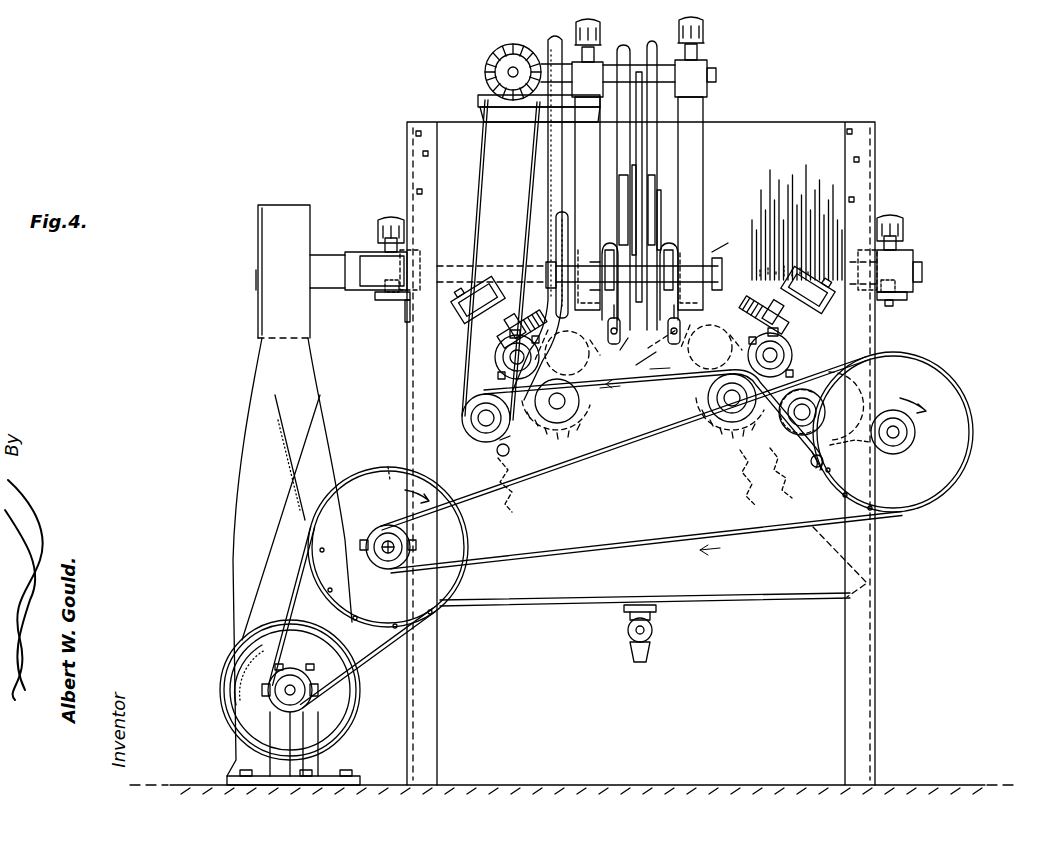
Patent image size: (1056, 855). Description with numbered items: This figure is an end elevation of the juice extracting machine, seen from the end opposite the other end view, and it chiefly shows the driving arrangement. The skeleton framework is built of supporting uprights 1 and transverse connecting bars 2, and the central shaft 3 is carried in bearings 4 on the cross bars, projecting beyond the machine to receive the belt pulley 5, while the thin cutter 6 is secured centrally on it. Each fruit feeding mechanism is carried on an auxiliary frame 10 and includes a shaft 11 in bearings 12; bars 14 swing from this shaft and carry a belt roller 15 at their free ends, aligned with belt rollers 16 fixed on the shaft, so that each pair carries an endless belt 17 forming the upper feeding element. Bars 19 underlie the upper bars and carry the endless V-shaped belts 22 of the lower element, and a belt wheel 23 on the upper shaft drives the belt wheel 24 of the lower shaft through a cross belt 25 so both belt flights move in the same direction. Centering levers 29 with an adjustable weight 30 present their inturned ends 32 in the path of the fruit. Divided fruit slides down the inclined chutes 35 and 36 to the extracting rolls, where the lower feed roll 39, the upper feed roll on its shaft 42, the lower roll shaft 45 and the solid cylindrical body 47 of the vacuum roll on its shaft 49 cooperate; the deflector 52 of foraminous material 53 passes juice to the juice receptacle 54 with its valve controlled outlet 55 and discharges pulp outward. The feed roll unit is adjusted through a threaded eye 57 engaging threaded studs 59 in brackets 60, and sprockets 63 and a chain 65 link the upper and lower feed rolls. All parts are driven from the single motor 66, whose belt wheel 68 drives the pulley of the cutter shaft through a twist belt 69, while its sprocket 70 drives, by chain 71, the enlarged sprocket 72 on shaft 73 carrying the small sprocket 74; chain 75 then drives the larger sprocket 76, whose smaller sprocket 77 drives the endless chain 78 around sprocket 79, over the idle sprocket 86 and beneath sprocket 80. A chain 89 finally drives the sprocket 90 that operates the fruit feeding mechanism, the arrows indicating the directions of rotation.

The supporting uprights 1 is at (407, 358).
The transverse connecting bars 2 is at (383, 300).
The shaft 3 is at (922, 272).
The bearings 4 is at (370, 256).
The belt pulley 5 is at (258, 222).
The cutter 6 is at (649, 355).
The auxiliary frames 10 is at (703, 118).
The shaft 11 is at (640, 72).
The bearings 12 is at (716, 72).
The bars 14 is at (632, 176).
The belt roller 15 is at (662, 196).
The belt rollers 16 is at (657, 52).
The endless belt 17 is at (620, 160).
The bars 19 is at (690, 316).
The endless V-shaped belts 22 is at (668, 330).
The belt wheel 23 is at (551, 40).
The belt wheel 24 is at (556, 252).
The cross belt 25 is at (556, 140).
The levers 29 is at (694, 266).
The adjustable weight 30 is at (682, 333).
The inturned ends 32 is at (672, 245).
The inclined chute 35 is at (575, 352).
The inclined chute 36 is at (701, 347).
The lower feed roll 39 is at (506, 456).
The shaft 42 is at (495, 360).
The shaft 45 is at (827, 392).
The solid cylindrical body 47 is at (578, 424).
The shaft 49 is at (580, 402).
The deflector 52 is at (666, 584).
The foraminous material 53 is at (645, 482).
The juice receptacle 54 is at (586, 604).
The valve controlled outlet 55 is at (652, 630).
The threaded eye 57 is at (520, 330).
The threaded studs 59 is at (510, 324).
The brackets 60 is at (470, 312).
The sprockets 63 is at (508, 330).
The chain 65 is at (498, 376).
The motor 66 is at (226, 706).
The belt wheel 68 is at (342, 720).
The twist belt 69 is at (304, 372).
The sprocket 70 is at (298, 676).
The chain 71 is at (372, 660).
The enlarged sprocket 72 is at (368, 480).
The shaft 73 is at (402, 538).
The small sprocket 74 is at (387, 560).
The chain 75 is at (562, 462).
The larger sprocket 76 is at (912, 366).
The smaller sprocket 77 is at (916, 430).
The endless chain 78 is at (607, 389).
The sprocket 79 is at (462, 420).
The sprocket 80 is at (827, 408).
The idle sprocket 86 is at (718, 400).
The chain 89 is at (480, 196).
The sprocket 90 is at (485, 72).